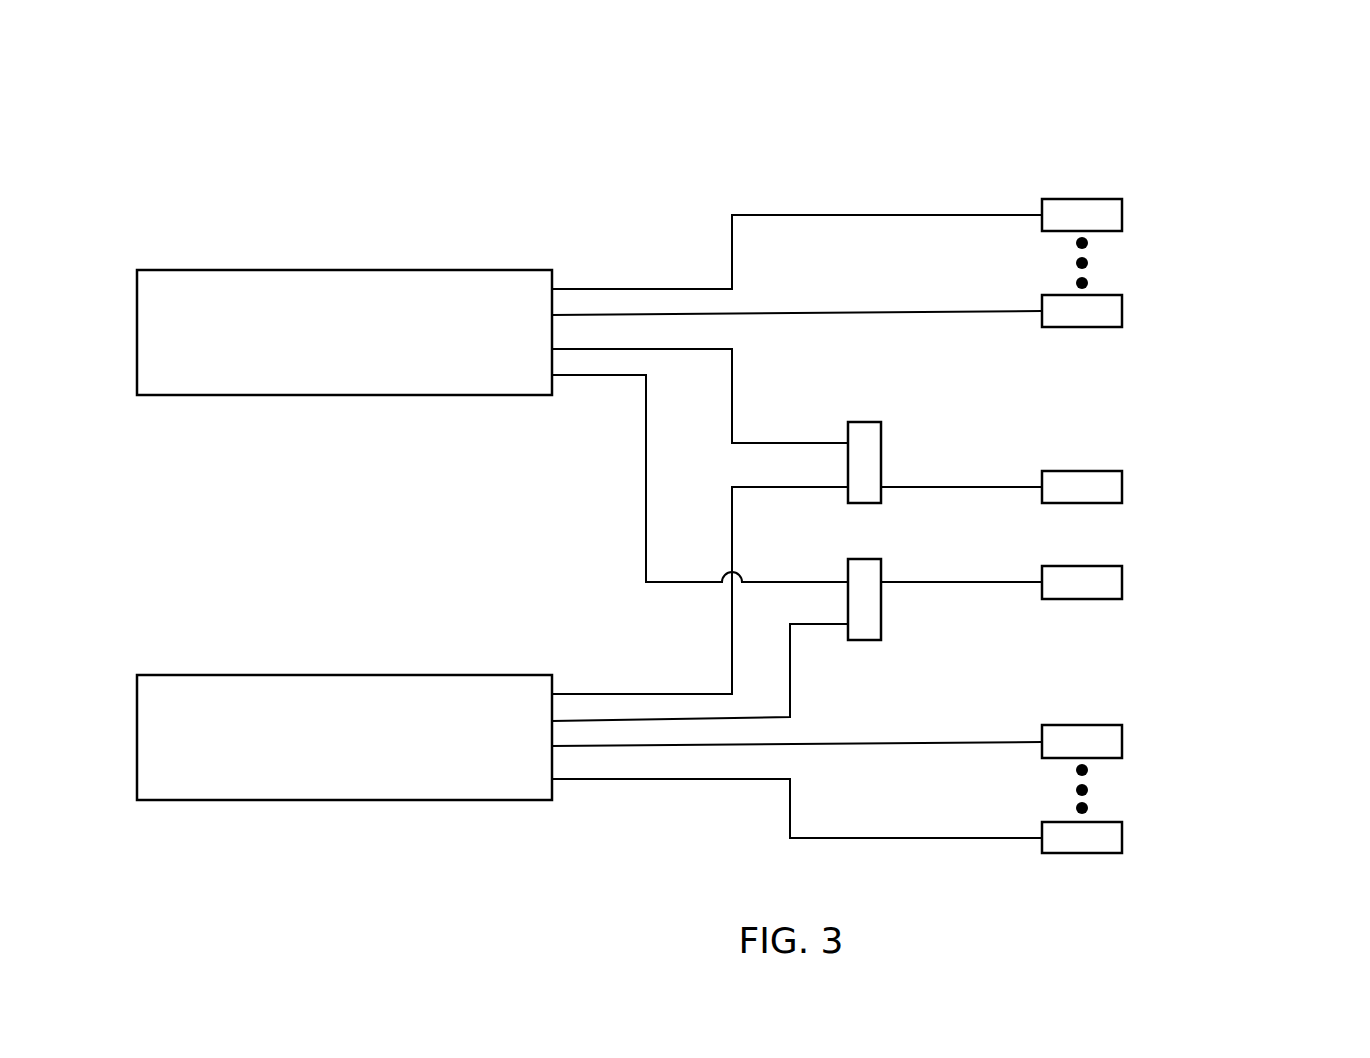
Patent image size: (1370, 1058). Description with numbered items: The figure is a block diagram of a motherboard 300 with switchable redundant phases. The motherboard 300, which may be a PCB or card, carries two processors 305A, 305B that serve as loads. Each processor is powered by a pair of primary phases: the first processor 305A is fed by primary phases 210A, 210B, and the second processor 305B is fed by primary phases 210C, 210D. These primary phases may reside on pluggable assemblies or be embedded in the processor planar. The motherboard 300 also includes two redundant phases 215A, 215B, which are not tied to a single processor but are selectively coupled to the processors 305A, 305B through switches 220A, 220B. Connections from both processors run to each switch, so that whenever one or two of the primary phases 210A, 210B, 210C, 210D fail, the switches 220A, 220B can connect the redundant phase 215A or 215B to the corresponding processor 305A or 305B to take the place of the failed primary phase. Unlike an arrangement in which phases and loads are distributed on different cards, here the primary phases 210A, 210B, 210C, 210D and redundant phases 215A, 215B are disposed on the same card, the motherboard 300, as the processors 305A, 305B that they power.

The motherboard 300 is at (356, 113).
The processor 305A is at (377, 355).
The processor 305B is at (377, 759).
The primary phase 210A is at (1122, 212).
The primary phase 210B is at (1122, 308).
The primary phase 210C is at (1122, 738).
The primary phase 210D is at (1122, 835).
The redundant phase 215A is at (1122, 484).
The redundant phase 215B is at (1122, 579).
The switch 220A is at (881, 440).
The switch 220B is at (881, 622).